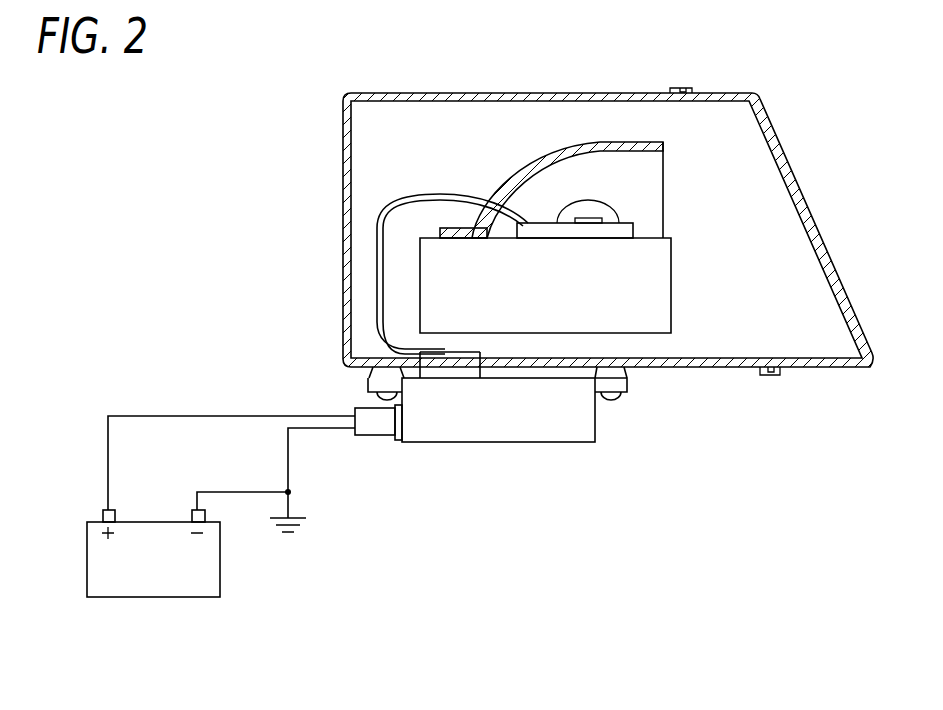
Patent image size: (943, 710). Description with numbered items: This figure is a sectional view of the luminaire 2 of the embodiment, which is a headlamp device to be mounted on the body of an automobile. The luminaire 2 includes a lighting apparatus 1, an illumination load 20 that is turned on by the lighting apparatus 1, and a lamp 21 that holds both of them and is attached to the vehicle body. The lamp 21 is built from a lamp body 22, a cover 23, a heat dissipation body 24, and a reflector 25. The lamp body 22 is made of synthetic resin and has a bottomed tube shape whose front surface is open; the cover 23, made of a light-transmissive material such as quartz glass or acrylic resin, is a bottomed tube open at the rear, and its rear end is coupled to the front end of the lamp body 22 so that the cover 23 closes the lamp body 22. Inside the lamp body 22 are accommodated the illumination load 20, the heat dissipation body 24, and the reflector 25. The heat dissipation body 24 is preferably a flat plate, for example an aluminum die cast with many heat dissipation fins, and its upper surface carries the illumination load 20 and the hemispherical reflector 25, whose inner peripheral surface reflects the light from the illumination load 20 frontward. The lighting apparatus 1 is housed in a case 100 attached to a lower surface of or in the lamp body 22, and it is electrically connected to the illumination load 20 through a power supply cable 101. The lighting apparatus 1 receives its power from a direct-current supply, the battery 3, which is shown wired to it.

The luminaire 2 is at (722, 72).
The lamp 21 is at (476, 91).
The lamp body 22 is at (693, 378).
The cover 23 is at (794, 144).
The heat dissipation body 24 is at (661, 286).
The reflector 25 is at (522, 165).
The illumination load 20 is at (623, 210).
The power supply cable 101 is at (435, 198).
The case 100 is at (540, 428).
The lighting apparatus 1 is at (472, 452).
The battery 3 is at (153, 580).